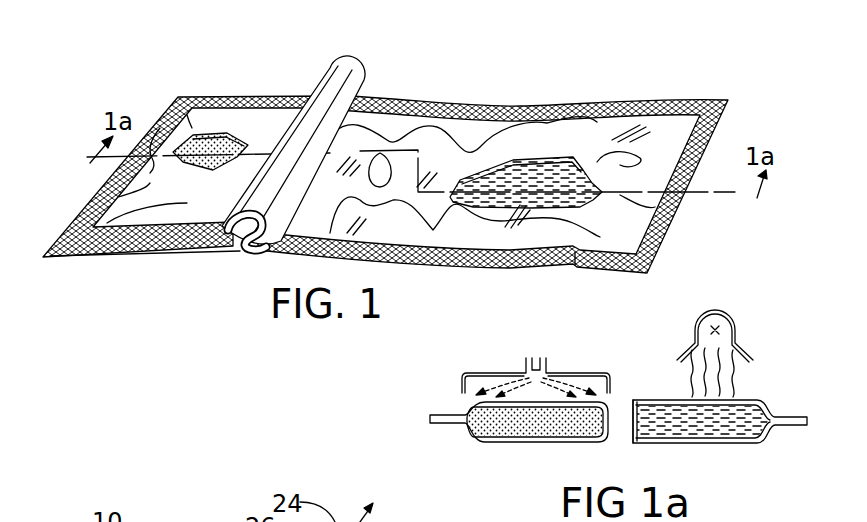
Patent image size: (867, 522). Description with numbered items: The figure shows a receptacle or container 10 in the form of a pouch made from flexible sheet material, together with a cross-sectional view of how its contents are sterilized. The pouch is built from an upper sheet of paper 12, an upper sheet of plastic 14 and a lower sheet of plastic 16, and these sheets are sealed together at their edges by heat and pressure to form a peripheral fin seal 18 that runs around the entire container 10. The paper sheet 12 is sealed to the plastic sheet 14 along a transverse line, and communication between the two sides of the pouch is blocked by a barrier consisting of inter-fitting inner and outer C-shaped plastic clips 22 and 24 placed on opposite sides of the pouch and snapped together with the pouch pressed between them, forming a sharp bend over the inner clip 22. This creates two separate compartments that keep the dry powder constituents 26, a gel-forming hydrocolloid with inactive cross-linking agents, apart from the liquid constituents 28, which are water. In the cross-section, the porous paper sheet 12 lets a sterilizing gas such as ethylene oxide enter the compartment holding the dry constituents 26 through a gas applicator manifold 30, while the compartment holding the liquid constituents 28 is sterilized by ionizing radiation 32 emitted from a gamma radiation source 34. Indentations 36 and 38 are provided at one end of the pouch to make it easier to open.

In FIG. 1, the container 10 is at (198, 84).
In FIG. 1, the upper sheet of paper 12 is at (238, 117).
In FIG. 1A, the upper sheet of paper 12 is at (470, 403).
In FIG. 1, the upper sheet of plastic 14 is at (468, 140).
In FIG. 1A, the upper sheet of plastic 14 is at (652, 400).
In FIG. 1A, the lower sheet of plastic 16 is at (590, 443).
In FIG. 1, the peripheral fin seal 18 is at (160, 118).
In FIG. 1, the inner C-shaped clip 22 is at (240, 250).
In FIG. 1, the outer C-shaped clip 24 is at (347, 63).
In FIG. 1, the dry powder constituents 26 is at (214, 137).
In FIG. 1A, the dry powder constituents 26 is at (503, 432).
In FIG. 1, the liquid constituents 28 is at (530, 177).
In FIG. 1A, the liquid constituents 28 is at (725, 425).
In FIG. 1A, the gas applicator manifold 30 is at (565, 373).
In FIG. 1A, the ionizing radiation 32 is at (743, 386).
In FIG. 1A, the gamma radiation source 34 is at (727, 318).
In FIG. 1, the indentation 36 is at (660, 100).
In FIG. 1, the indentation 38 is at (574, 264).